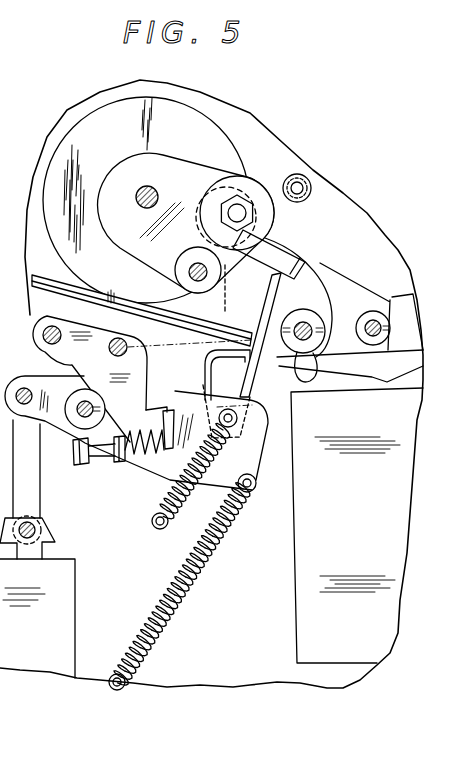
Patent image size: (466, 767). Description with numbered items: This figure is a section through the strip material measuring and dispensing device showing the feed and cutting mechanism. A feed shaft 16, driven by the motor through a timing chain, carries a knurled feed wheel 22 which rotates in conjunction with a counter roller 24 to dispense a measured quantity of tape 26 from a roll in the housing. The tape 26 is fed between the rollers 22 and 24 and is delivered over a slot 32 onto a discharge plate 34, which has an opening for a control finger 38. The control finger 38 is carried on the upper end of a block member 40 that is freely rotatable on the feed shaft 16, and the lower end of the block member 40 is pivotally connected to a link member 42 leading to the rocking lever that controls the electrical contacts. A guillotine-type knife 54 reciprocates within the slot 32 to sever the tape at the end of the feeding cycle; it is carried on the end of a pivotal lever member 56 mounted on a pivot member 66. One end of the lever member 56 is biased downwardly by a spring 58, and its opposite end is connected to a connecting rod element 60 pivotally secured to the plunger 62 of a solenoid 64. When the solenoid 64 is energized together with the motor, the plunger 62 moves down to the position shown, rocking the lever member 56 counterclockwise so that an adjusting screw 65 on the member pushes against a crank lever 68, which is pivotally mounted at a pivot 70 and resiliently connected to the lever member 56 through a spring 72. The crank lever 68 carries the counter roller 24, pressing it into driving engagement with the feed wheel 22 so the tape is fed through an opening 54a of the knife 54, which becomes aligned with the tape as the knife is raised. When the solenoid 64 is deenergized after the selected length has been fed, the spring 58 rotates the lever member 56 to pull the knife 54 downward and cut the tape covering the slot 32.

The feed shaft 16 is at (147, 189).
The feed wheel 22 is at (203, 119).
The counter roller 24 is at (122, 322).
The tape 26 is at (50, 297).
The slot 32 is at (352, 338).
The discharge plate 34 is at (371, 382).
The control finger 38 is at (280, 247).
The block member 40 is at (213, 187).
The link member 42 is at (225, 310).
The guillotine-type knife 54 is at (258, 400).
The opening of the knife 54a is at (266, 412).
The lever member 56 is at (256, 473).
The spring 58 is at (200, 578).
The connecting rod element 60 is at (33, 490).
The plunger 62 is at (50, 530).
The solenoid 64 is at (75, 611).
The adjusting screw 65 is at (103, 460).
The pivot member 66 is at (83, 416).
The crank lever 68 is at (133, 380).
The pivot 70 is at (127, 347).
The spring 72 is at (140, 453).